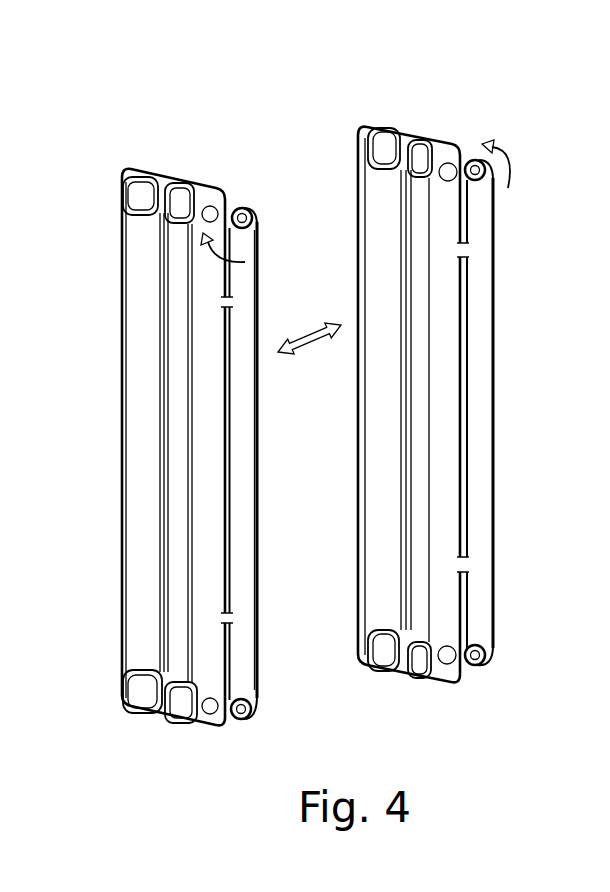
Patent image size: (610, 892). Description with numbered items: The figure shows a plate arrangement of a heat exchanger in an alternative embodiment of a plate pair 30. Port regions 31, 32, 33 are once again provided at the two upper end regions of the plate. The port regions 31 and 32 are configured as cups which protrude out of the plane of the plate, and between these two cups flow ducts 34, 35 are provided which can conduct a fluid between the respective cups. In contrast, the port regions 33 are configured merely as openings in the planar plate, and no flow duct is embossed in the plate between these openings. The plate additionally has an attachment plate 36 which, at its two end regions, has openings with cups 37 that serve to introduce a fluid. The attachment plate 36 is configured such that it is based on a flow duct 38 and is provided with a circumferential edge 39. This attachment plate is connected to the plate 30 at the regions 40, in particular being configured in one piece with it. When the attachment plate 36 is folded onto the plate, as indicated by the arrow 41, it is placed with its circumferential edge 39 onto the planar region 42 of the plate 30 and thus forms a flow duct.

The plate pair 30 is at (198, 163).
The port region 31 is at (135, 190).
The port region 32 is at (178, 198).
The port region 33 is at (212, 207).
The flow duct 34 is at (147, 407).
The flow duct 35 is at (178, 485).
The attachment plate 36 is at (255, 563).
The cup 37 is at (248, 212).
The flow duct 38 is at (246, 345).
The circumferential edge 39 is at (257, 427).
The connection region 40 is at (233, 301).
The arrow 41 is at (248, 240).
The planar region 42 is at (205, 577).